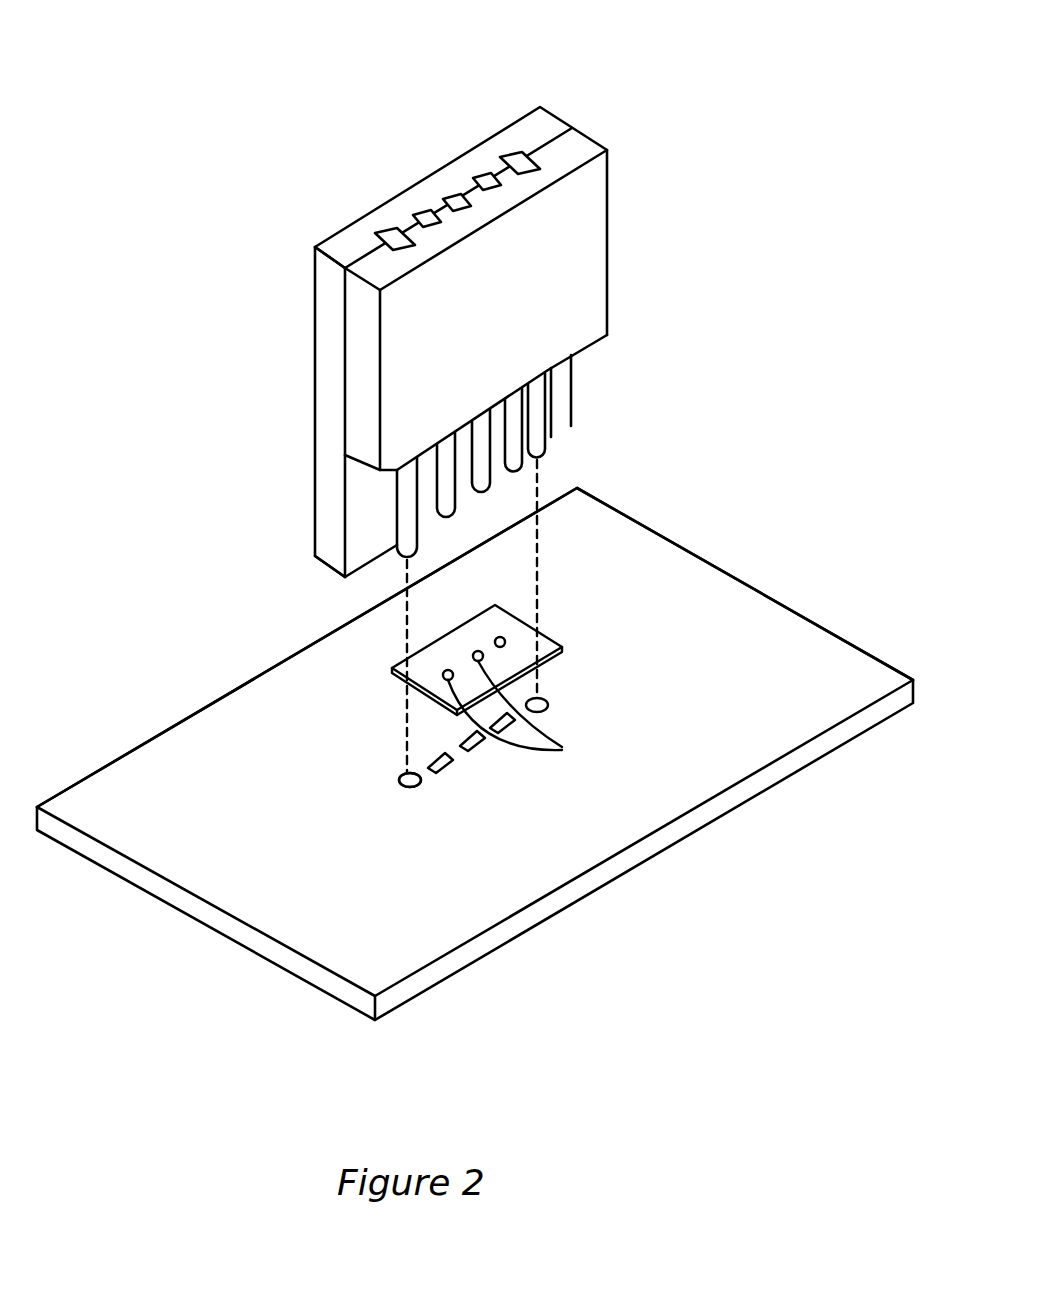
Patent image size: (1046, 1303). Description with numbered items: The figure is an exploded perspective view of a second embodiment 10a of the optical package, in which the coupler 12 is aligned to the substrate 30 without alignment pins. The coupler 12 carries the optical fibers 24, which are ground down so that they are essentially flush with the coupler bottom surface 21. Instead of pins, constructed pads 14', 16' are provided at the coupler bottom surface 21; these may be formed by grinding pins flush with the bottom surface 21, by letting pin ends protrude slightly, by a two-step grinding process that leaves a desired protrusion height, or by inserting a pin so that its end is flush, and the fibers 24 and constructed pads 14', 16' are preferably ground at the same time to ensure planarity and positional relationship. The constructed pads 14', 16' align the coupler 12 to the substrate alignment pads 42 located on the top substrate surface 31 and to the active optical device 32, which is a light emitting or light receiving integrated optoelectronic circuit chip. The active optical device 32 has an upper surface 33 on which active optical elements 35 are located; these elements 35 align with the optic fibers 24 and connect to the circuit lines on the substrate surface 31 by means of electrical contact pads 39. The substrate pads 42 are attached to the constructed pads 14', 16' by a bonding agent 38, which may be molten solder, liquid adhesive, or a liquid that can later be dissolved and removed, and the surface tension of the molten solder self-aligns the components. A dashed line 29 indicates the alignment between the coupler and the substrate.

The second embodiment optical package 10a is at (733, 92).
The coupler 12 is at (603, 207).
The constructed pad 14' is at (554, 423).
The constructed pad 16' is at (328, 553).
The coupler bottom surface 21 is at (571, 426).
The optical fibers 24 is at (430, 217).
The alignment axis 29 is at (555, 657).
The substrate 30 is at (803, 673).
The top substrate surface 31 is at (703, 597).
The active optical device 32 is at (537, 565).
The upper surface 33 is at (505, 613).
The active optical elements 35 is at (533, 716).
The bonding agent 38 is at (400, 786).
The electrical contact pads 39 is at (452, 763).
The substrate alignment pads 42 is at (548, 707).